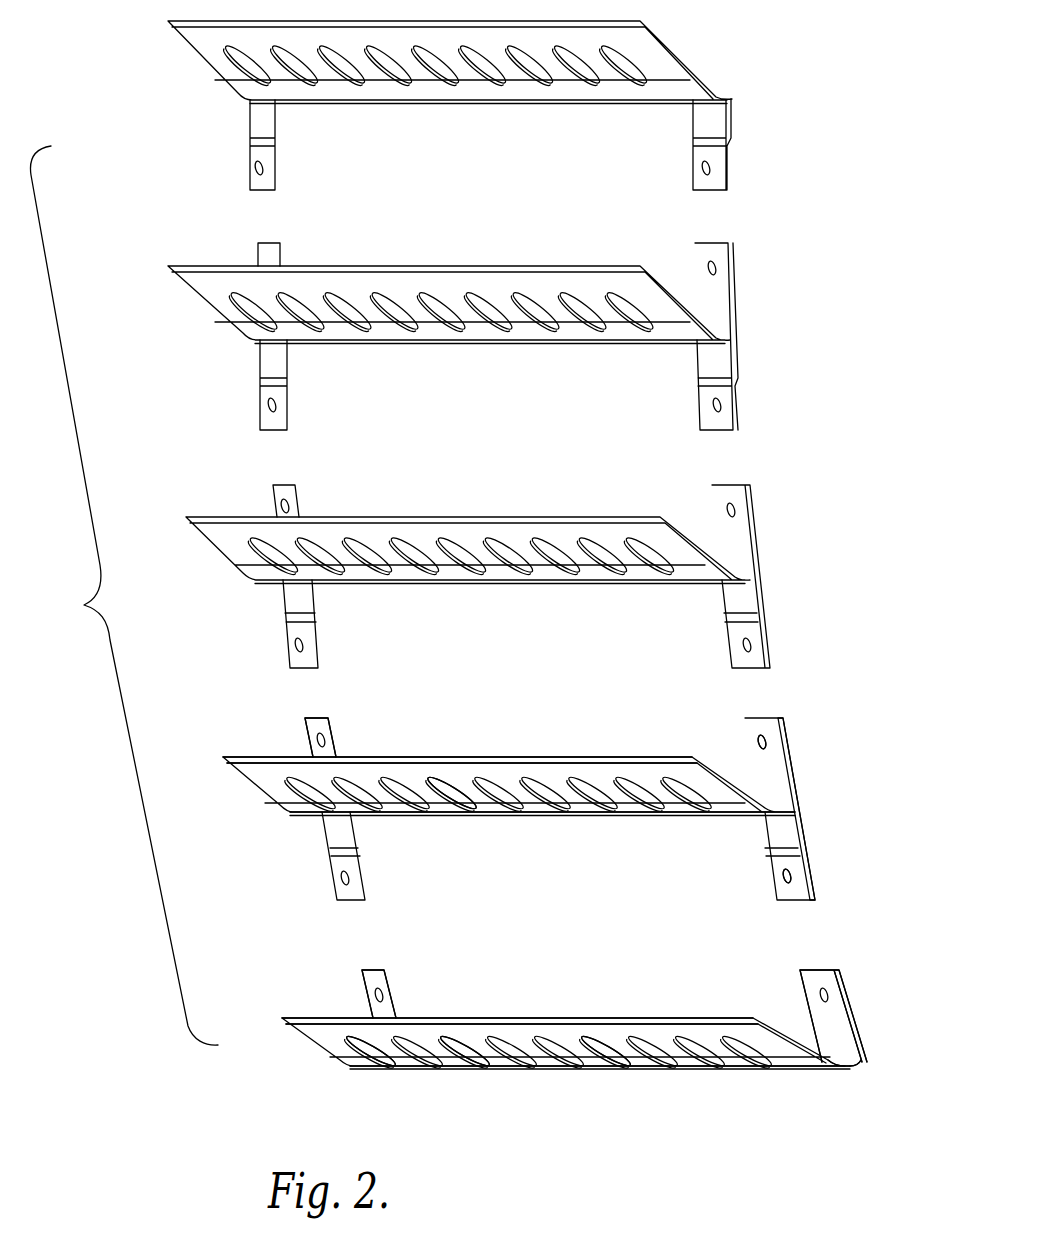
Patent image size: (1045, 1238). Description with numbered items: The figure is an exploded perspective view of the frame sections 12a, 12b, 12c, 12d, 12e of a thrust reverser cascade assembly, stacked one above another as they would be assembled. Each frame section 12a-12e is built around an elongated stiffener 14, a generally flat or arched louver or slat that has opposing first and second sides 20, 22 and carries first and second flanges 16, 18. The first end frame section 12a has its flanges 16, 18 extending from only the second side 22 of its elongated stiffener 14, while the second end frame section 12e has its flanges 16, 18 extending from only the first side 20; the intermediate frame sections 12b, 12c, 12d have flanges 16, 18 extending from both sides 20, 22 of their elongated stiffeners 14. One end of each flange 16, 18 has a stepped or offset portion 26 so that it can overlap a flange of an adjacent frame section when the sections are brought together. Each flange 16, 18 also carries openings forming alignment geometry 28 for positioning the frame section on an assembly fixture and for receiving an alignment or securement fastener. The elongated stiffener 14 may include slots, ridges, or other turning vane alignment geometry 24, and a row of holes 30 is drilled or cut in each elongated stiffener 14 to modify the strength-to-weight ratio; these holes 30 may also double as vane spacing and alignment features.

The first end frame section 12a is at (298, 1008).
The intermediate frame section 12b is at (246, 735).
The intermediate frame section 12c is at (208, 497).
The intermediate frame section 12d is at (150, 270).
The second end frame section 12e is at (152, 43).
The elongated stiffener 14 is at (593, 822).
The first flange 16 is at (855, 1017).
The second flange 18 is at (292, 715).
The first side 20 is at (482, 797).
The second side 22 is at (552, 750).
The turning vane alignment geometry 24 is at (837, 1058).
The stepped or offset portion 26 is at (812, 888).
The alignment geometry 28 is at (774, 743).
The holes 30 is at (476, 1050).